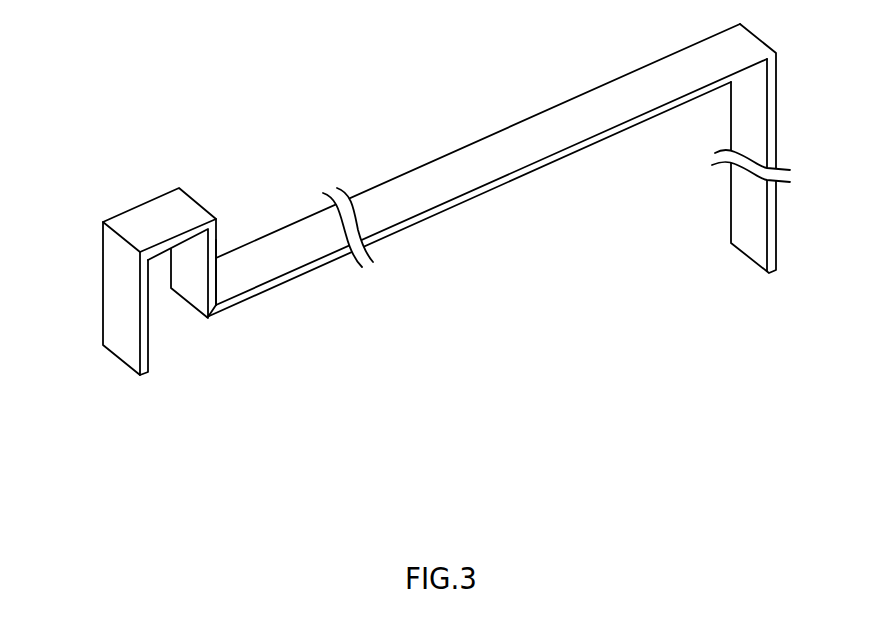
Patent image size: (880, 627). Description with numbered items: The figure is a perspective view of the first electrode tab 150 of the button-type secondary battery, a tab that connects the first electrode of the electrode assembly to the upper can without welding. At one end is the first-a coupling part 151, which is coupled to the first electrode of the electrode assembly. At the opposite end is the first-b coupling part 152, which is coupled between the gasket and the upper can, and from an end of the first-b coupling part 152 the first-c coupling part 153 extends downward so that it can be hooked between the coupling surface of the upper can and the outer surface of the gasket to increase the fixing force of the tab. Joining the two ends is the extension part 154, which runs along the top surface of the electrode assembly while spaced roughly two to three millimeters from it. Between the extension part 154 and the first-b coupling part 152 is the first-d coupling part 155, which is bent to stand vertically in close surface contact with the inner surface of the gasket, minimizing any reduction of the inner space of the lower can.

The first electrode tab 150 is at (439, 199).
The first-a coupling part 151 is at (777, 120).
The first-b coupling part 152 is at (158, 208).
The first-c coupling part 153 is at (113, 292).
The extension part 154 is at (421, 172).
The first-d coupling part 155 is at (218, 232).